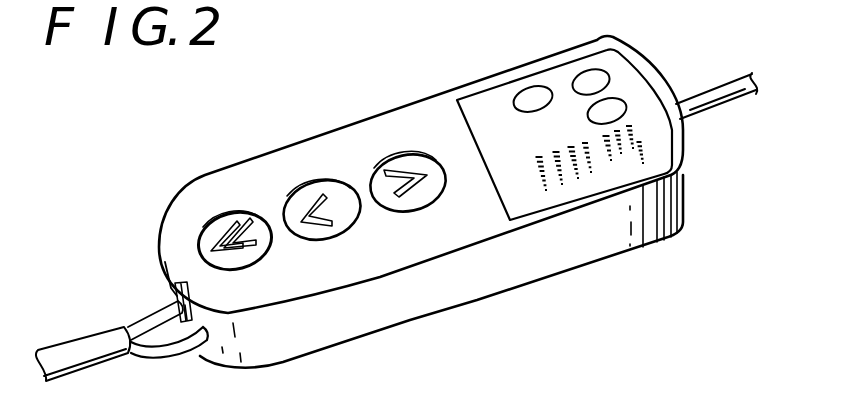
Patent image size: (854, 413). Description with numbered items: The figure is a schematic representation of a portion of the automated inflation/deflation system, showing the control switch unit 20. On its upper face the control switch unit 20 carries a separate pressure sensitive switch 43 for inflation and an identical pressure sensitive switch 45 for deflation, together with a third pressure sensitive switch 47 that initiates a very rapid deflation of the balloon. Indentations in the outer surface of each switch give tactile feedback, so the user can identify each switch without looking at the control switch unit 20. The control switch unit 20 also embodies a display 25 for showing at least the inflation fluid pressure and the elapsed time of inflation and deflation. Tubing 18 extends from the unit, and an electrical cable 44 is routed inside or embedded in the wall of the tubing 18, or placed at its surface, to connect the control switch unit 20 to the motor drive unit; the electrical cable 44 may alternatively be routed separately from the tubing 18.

The control switch unit 20 is at (340, 127).
The display 25 is at (480, 107).
The pressure sensitive switch 43 is at (389, 153).
The pressure sensitive switch 45 is at (302, 182).
The third pressure sensitive switch 47 is at (219, 212).
The tubing 18 is at (712, 112).
The electrical cable 44 is at (147, 358).